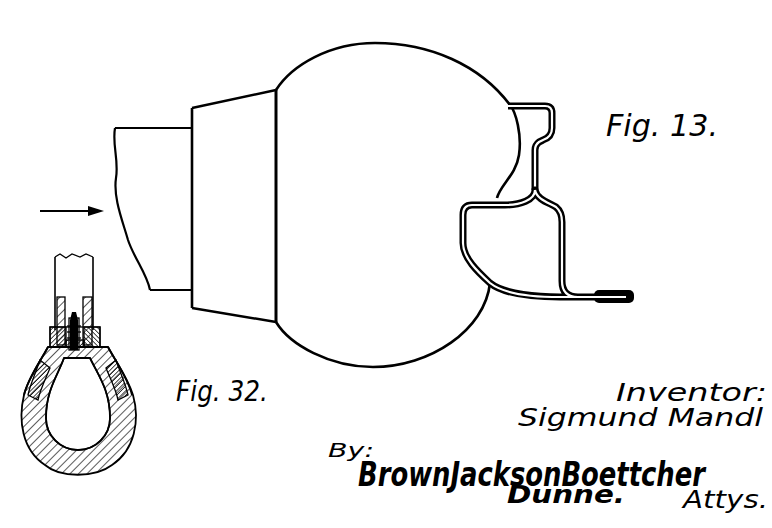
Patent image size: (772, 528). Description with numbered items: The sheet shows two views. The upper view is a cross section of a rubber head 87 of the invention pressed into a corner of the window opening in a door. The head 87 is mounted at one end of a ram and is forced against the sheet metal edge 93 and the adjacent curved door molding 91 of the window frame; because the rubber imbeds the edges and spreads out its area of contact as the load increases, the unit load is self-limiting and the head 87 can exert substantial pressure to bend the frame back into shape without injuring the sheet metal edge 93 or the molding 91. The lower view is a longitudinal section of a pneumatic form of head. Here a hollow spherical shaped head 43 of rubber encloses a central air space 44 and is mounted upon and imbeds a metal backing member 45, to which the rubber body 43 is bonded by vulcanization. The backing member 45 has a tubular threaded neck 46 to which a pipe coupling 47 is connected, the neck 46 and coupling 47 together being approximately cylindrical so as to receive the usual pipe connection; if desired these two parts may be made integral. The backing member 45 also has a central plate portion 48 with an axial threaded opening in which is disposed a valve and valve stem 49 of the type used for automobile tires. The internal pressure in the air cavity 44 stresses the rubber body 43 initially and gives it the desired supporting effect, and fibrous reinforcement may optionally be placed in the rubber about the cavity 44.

In FIG. 13, the head 87 is at (333, 63).
In FIG. 13, the sheet metal edge 93 is at (511, 104).
In FIG. 13, the spring clip lower loop 91 is at (466, 256).
In FIG. 32, the pipe coupling 47 is at (62, 273).
In FIG. 32, the valve and valve stem 49 is at (70, 329).
In FIG. 32, the tubular threaded neck 46 is at (52, 336).
In FIG. 32, the metal backing member 45 is at (113, 358).
In FIG. 32, the central plate portion 48 is at (67, 359).
In FIG. 32, the hollow spherical shaped head 43 is at (133, 441).
In FIG. 32, the central air space 44 is at (62, 430).